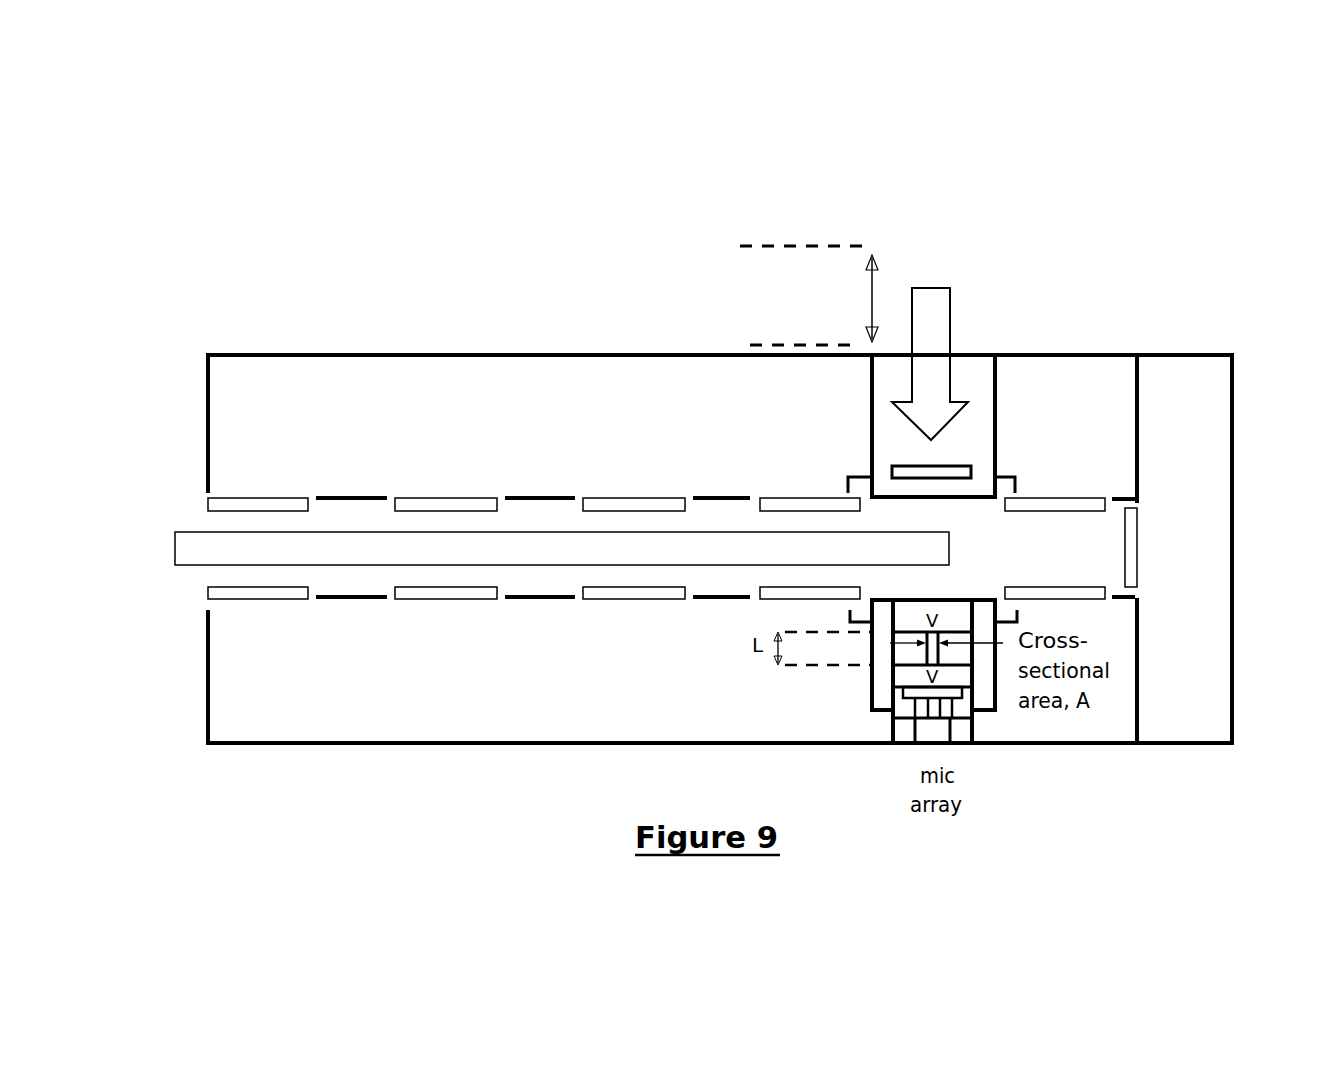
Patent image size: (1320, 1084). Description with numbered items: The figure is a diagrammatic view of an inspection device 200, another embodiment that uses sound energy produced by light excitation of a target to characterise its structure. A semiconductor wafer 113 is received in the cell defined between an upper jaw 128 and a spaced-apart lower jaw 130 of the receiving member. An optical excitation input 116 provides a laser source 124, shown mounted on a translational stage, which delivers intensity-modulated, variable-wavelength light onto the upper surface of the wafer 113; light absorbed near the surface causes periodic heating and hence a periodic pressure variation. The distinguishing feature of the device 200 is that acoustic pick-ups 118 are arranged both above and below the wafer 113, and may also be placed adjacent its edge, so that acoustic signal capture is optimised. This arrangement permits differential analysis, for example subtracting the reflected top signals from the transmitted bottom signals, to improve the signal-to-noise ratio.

The semiconductor wafer 113 is at (197, 542).
The optical excitation input 116 is at (972, 312).
The acoustic pickups 118 is at (241, 497).
The laser source 124 is at (904, 245).
The upper jaw 128 is at (373, 388).
The lower jaw 130 is at (341, 688).
The inspection device 200 is at (1127, 243).